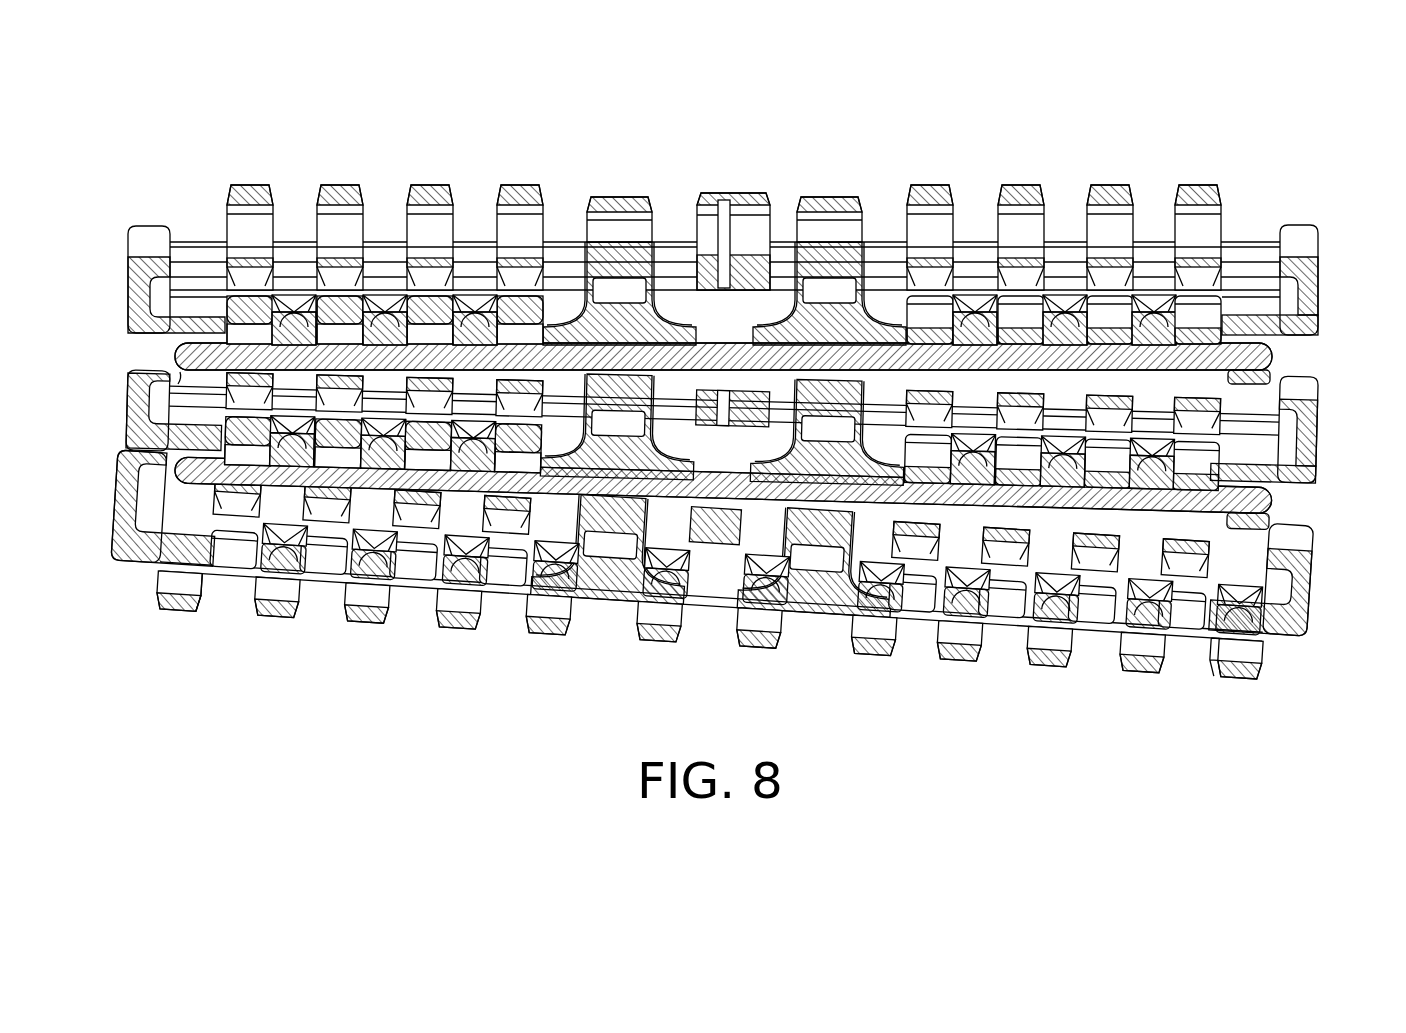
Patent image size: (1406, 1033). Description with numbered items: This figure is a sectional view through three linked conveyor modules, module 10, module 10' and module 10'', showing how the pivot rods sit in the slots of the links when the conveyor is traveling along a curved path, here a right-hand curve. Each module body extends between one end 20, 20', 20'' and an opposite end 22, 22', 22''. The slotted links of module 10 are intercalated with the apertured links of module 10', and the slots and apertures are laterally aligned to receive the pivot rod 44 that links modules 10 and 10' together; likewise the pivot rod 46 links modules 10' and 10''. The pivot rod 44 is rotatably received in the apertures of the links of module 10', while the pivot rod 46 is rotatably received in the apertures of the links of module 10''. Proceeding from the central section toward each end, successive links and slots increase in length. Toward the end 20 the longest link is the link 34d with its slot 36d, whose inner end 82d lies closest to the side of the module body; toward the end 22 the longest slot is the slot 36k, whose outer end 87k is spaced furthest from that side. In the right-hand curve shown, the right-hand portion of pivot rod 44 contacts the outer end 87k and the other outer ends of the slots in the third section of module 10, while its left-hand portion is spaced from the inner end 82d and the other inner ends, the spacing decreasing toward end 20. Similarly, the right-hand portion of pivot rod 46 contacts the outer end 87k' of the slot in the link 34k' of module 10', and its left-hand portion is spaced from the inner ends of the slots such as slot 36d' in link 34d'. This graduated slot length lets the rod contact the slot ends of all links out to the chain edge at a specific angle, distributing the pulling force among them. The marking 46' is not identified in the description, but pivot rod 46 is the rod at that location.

The module 10 is at (721, 573).
The module 10' is at (729, 430).
The module 10'' is at (730, 253).
The end 20 is at (140, 515).
The end 20' is at (141, 411).
The end 20'' is at (145, 279).
The end 22 is at (1298, 578).
The end 22' is at (1337, 429).
The end 22'' is at (1339, 280).
The link 34d is at (187, 441).
The link 34d' is at (260, 233).
The link 34k' is at (1290, 314).
The slot 36d is at (166, 455).
The slot 36d' is at (212, 253).
The slot 36k is at (1268, 361).
The pivot rod 44 is at (176, 488).
The pivot rod 46 is at (721, 343).
The connecting rod 46' is at (120, 364).
The inner end 82d is at (215, 505).
The outer end 87k is at (1304, 520).
The outer end 87k' is at (1309, 331).